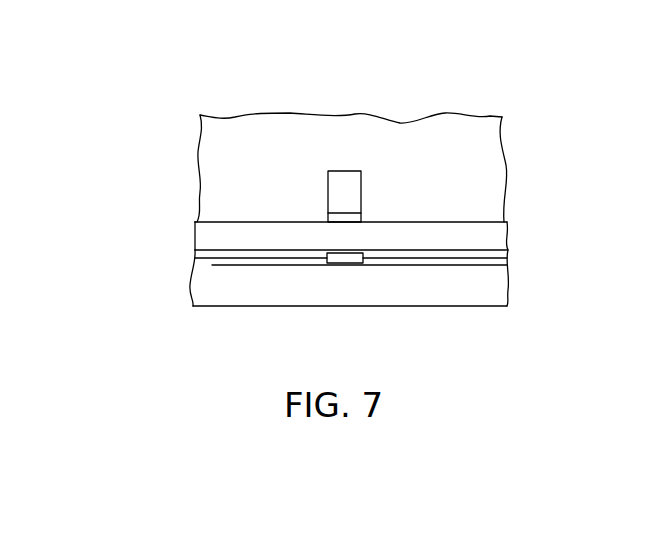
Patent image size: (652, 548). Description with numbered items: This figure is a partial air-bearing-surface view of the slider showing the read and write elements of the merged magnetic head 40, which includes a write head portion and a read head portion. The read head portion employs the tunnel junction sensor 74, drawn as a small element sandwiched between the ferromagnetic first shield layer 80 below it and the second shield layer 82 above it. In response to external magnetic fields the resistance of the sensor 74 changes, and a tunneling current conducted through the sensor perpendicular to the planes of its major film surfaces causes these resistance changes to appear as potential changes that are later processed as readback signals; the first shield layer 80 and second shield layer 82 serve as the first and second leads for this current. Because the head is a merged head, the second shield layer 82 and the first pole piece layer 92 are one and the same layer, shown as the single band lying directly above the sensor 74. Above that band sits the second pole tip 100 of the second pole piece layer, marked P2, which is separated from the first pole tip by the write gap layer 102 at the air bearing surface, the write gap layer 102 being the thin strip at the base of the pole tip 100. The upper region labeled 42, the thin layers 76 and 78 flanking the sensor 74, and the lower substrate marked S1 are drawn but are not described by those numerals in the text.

The merged magnetic head 40 is at (526, 128).
The dielectric layer 42 is at (203, 143).
The second pole tip 100 is at (350, 173).
The write gap layer 102 is at (345, 213).
The second shield layer 82 is at (284, 236).
The first pole piece layer 92 is at (197, 240).
The insulating layer 78 is at (465, 252).
The insulating layer 76 is at (254, 266).
The tunnel junction sensor 74 is at (345, 263).
The first shield layer 80 is at (495, 288).
The second polysilicon layer P2 is at (352, 196).
The first substrate S1 is at (418, 287).